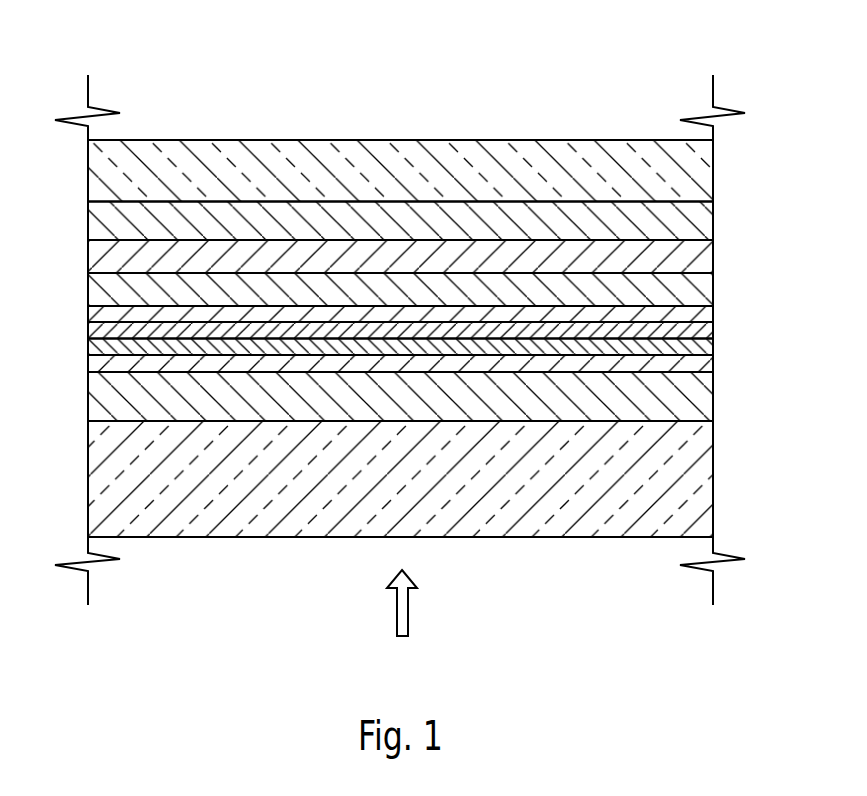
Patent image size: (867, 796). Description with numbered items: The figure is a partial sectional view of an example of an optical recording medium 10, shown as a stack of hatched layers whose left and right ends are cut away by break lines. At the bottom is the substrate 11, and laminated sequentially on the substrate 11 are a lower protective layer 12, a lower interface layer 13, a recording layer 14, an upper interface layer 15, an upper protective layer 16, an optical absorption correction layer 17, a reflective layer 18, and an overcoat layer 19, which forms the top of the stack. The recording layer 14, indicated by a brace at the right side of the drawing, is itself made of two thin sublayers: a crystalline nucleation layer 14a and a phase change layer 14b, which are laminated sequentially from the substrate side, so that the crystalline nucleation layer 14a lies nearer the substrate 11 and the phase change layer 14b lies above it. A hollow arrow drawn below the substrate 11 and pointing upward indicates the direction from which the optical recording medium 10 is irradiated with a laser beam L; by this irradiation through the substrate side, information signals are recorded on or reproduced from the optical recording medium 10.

The optical recording medium 10 is at (132, 91).
The substrate 11 is at (713, 472).
The lower protective layer 12 is at (713, 393).
The lower interface layer 13 is at (87, 365).
The recording layer 14 is at (465, 338).
The crystalline nucleation layer 14a is at (713, 348).
The phase change layer 14b is at (713, 332).
The upper interface layer 15 is at (87, 315).
The upper protective layer 16 is at (713, 290).
The optical absorption correction layer 17 is at (713, 255).
The reflective layer 18 is at (713, 223).
The overcoat layer 19 is at (713, 170).
The laser beam L is at (408, 620).